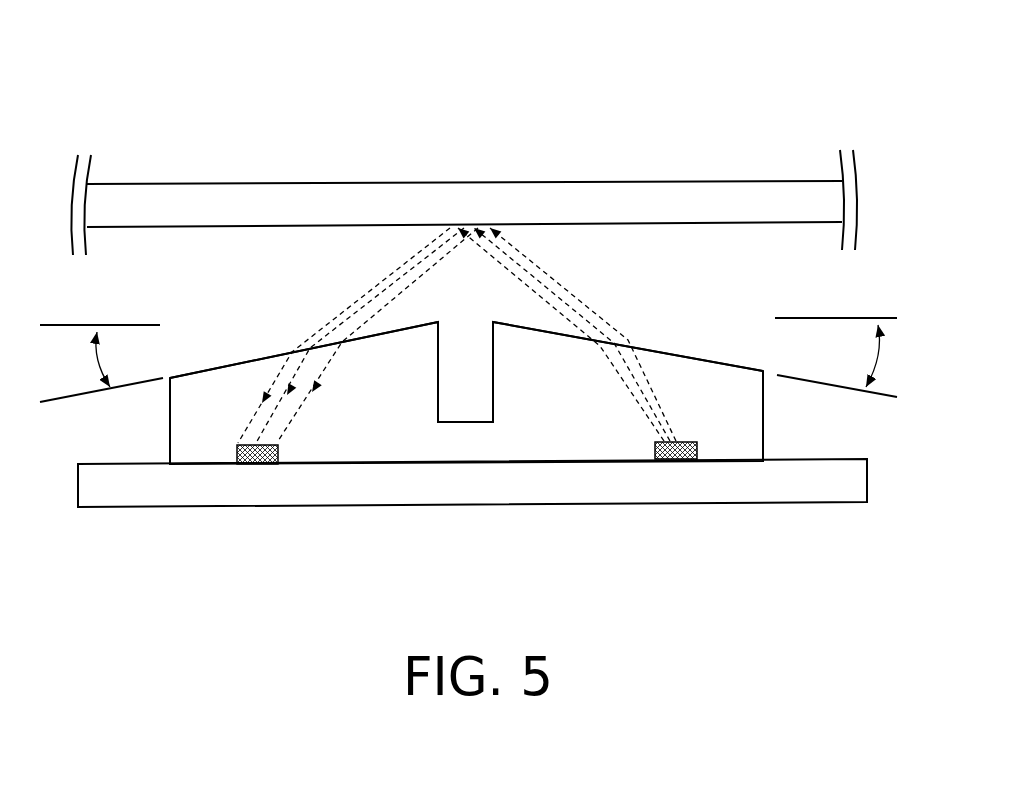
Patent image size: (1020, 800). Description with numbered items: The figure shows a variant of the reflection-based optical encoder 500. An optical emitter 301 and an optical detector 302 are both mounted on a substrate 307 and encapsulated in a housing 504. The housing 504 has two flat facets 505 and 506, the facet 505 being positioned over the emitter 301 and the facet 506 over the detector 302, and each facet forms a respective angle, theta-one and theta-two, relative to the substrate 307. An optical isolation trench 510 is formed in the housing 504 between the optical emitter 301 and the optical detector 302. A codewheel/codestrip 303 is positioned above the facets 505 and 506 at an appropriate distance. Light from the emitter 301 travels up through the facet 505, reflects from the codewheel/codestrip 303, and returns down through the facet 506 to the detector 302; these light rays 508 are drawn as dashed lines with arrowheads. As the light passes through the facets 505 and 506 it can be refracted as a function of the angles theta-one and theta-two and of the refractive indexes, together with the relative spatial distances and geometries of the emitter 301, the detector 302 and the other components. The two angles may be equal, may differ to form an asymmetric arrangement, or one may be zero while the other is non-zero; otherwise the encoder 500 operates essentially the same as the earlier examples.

The optical encoder 500 is at (655, 141).
The codewheel/codestrip 303 is at (719, 212).
The substrate 307 is at (115, 513).
The housing 504 is at (464, 432).
The flat facet 505 is at (667, 348).
The flat facet 506 is at (267, 351).
The optical isolation trench 510 is at (457, 409).
The light rays 508 is at (588, 279).
The optical emitter 301 is at (702, 445).
The optical detector 302 is at (233, 452).